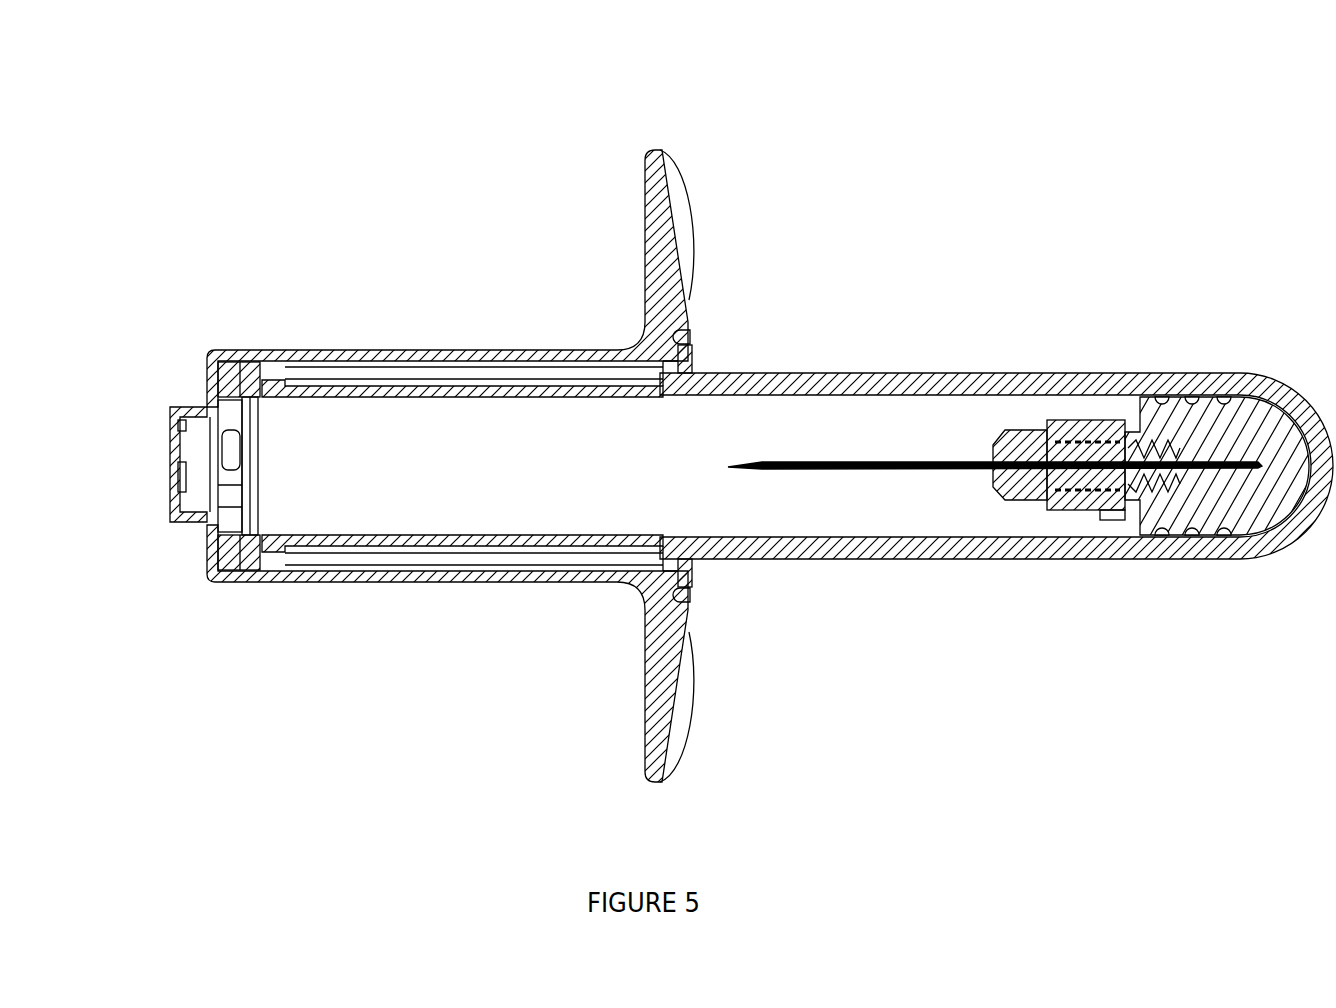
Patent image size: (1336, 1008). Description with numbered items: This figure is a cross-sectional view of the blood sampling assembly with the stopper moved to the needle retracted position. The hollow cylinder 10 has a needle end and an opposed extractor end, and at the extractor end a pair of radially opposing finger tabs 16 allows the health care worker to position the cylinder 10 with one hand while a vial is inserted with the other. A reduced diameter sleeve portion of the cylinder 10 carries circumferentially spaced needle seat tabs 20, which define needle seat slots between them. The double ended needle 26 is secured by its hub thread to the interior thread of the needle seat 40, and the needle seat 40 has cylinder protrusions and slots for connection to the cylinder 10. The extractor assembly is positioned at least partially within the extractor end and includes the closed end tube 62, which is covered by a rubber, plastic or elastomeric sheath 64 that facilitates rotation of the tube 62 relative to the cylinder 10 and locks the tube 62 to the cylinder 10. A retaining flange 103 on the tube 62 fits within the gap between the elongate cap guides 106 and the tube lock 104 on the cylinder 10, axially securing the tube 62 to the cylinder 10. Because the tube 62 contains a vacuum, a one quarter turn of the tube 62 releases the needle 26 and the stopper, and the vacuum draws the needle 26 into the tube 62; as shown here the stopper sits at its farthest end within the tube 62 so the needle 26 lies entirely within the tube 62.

The cylinder 10 is at (432, 348).
The finger tabs 16 is at (693, 188).
The needle seat tabs 20 is at (175, 472).
The double ended needle 26 is at (922, 473).
The needle seat 40 is at (1088, 518).
The closed end tube 62 is at (578, 383).
The sheath 64 is at (957, 375).
The retaining flange 103 is at (683, 353).
The tube lock 104 is at (688, 367).
The cap guides 106 is at (538, 560).